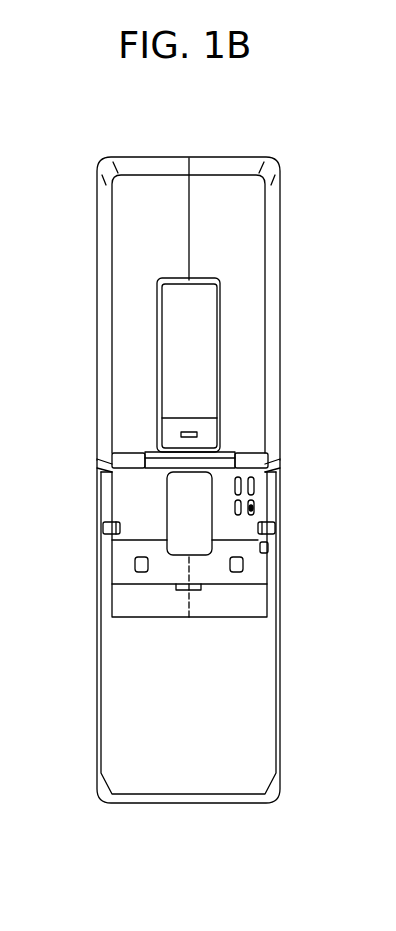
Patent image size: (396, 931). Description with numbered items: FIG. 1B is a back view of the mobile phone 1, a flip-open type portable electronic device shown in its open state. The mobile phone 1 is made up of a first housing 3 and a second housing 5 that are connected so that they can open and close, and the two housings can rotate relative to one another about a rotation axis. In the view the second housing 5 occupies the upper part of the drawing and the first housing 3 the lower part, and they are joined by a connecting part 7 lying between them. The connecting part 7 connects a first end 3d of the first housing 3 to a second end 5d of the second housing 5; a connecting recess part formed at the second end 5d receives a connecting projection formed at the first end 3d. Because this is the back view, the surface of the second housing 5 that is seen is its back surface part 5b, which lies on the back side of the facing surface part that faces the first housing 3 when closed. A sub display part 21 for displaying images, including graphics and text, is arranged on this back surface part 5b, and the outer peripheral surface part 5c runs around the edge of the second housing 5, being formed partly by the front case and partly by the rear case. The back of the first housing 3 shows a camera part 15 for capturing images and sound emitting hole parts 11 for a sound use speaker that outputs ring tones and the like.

The mobile phone 1 is at (199, 93).
The first housing 3 is at (262, 677).
The first end 3d is at (100, 480).
The second housing 5 is at (273, 326).
The back surface part 5b is at (255, 415).
The outer peripheral surface part 5c is at (283, 277).
The second end 5d is at (105, 456).
The connecting part 7 is at (293, 466).
The sound emitting hole parts 11 is at (253, 503).
The camera part 15 is at (200, 523).
The sub display part 21 is at (200, 360).